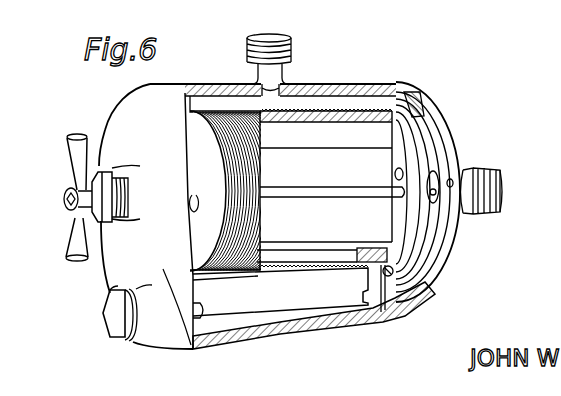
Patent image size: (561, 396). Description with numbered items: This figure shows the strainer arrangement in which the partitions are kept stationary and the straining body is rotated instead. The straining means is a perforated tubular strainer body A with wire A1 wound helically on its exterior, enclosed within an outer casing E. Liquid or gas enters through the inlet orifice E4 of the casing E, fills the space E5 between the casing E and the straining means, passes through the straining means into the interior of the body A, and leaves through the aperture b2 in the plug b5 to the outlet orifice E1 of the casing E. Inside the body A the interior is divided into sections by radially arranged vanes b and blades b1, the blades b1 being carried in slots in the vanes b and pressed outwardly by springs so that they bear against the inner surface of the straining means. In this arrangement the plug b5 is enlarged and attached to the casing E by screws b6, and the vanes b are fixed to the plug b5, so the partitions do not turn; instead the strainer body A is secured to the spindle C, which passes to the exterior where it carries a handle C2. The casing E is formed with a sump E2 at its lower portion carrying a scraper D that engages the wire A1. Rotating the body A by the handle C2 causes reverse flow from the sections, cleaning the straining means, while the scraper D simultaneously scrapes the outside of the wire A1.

The strainer body A is at (358, 133).
The wire A1 is at (273, 113).
The vanes b is at (418, 90).
The blades b1 is at (363, 163).
The aperture b2 is at (401, 172).
The plug b5 is at (408, 243).
The screws b6 is at (392, 273).
The spindle C is at (97, 193).
The handle C2 is at (73, 238).
The scraper D is at (280, 290).
The outer casing E is at (279, 215).
The outlet orifice E1 is at (490, 170).
The sump E2 is at (200, 326).
The inlet orifice E4 is at (287, 50).
The space E5 is at (197, 96).